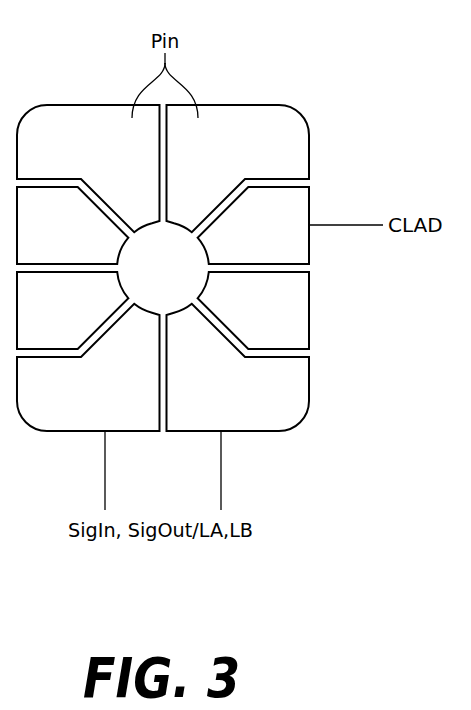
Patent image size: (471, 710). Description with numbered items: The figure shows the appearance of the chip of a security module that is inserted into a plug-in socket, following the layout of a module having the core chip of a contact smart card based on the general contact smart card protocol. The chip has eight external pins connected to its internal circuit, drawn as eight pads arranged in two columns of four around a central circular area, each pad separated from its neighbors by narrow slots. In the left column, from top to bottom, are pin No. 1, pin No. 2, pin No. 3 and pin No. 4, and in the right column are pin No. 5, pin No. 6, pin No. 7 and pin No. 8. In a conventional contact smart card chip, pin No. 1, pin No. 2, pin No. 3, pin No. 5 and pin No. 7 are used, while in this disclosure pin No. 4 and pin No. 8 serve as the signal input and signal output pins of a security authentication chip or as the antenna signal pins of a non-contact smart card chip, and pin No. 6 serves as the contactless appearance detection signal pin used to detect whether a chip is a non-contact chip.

The pin No. 1 is at (88, 168).
The pin No. 2 is at (72, 225).
The pin No. 3 is at (72, 310).
The pin No. 4 is at (88, 367).
The pin No. 5 is at (238, 168).
The pin No. 6 is at (253, 225).
The pin No. 7 is at (253, 310).
The pin No. 8 is at (238, 367).